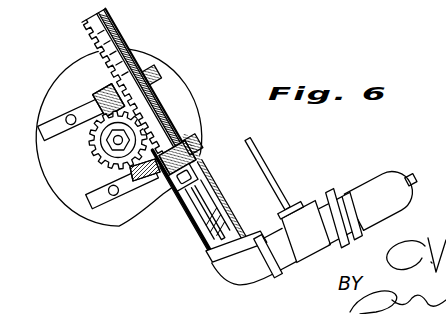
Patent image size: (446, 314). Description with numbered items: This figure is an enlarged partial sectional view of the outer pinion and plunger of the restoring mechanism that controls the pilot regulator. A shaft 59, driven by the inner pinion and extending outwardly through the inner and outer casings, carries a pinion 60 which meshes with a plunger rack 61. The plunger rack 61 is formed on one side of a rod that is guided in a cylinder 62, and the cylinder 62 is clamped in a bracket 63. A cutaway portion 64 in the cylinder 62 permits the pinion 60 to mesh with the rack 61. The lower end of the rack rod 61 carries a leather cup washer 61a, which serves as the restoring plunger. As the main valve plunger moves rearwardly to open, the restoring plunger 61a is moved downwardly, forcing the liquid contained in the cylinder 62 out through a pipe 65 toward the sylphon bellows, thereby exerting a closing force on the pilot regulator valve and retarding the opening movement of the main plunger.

The shaft 59 is at (113, 142).
The pinion 60 is at (108, 168).
The plunger rack 61 is at (124, 47).
The leather cup washer 61a is at (200, 180).
The cylinder 62 is at (198, 228).
The bracket 63 is at (192, 132).
The cutaway portion 64 is at (158, 182).
The pipe 65 is at (276, 204).